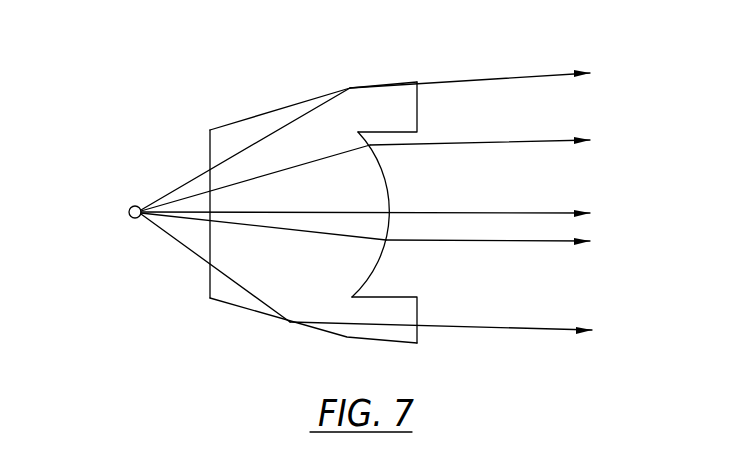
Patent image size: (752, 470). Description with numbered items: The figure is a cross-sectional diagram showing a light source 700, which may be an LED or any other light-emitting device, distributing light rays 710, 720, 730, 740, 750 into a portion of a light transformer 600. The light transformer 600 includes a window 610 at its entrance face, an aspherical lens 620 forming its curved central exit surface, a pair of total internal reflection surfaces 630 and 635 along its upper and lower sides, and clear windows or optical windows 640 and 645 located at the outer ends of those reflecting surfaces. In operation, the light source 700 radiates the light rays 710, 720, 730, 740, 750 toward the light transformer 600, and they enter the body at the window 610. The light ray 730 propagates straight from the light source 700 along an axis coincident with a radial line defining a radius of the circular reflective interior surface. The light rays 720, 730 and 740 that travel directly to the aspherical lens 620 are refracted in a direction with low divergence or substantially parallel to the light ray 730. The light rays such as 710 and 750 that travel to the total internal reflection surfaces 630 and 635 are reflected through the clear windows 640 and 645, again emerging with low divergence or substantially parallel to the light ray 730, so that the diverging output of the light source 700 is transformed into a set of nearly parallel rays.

The light transformer 600 is at (200, 58).
The window 610 is at (208, 134).
The aspherical lens 620 is at (389, 190).
The total internal reflection surface 630 is at (315, 92).
The total internal reflection surface 635 is at (347, 337).
The clear window 640 is at (417, 113).
The clear window 645 is at (417, 335).
The light source 700 is at (128, 211).
The light ray 710 is at (387, 137).
The light ray 720 is at (388, 172).
The light ray 730 is at (389, 214).
The light ray 740 is at (389, 231).
The light ray 750 is at (390, 280).